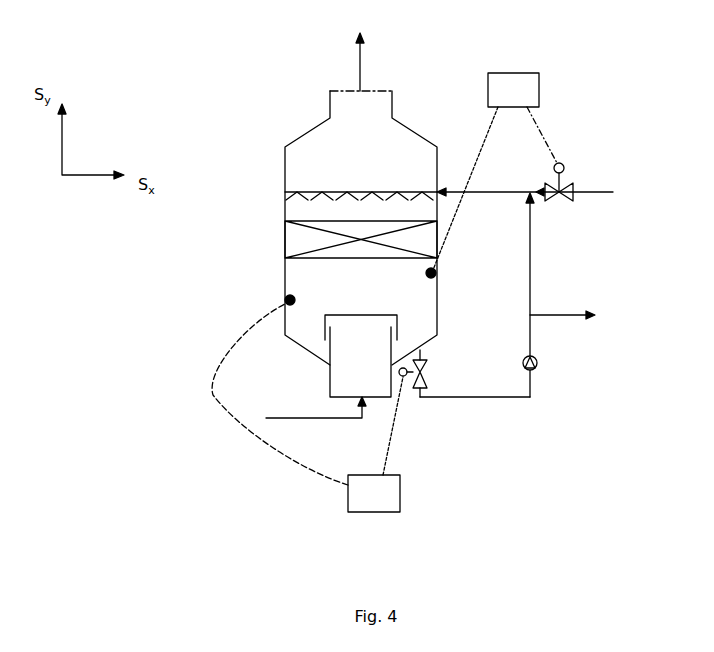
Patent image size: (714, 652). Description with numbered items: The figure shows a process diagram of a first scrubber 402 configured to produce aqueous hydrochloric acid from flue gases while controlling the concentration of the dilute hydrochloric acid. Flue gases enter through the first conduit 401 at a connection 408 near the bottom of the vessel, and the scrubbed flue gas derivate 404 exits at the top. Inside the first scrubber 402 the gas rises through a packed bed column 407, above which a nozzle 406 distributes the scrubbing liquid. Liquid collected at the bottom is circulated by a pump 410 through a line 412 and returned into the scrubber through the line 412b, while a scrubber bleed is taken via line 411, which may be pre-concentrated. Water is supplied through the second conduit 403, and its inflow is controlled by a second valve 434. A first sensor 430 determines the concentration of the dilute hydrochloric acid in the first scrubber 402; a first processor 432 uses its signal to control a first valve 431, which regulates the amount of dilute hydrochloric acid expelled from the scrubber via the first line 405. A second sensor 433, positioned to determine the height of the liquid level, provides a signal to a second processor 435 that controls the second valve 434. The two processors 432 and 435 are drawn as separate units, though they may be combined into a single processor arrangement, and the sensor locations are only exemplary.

The first conduit 401 is at (300, 420).
The first scrubber 402 is at (282, 165).
The second conduit 403 is at (582, 190).
The flue gas derivate 404 is at (363, 82).
The first line 405 is at (472, 397).
The nozzle 406 is at (440, 200).
The packed bed column 407 is at (292, 240).
The connection 408 is at (325, 372).
The pump 410 is at (540, 363).
The line 411 is at (548, 315).
The line 412 is at (532, 243).
The line 412b is at (452, 190).
The first sensor 430 is at (285, 300).
The first valve 431 is at (421, 392).
The first processor 432 is at (307, 407).
The second sensor 433 is at (437, 274).
The second valve 434 is at (552, 184).
The second processor 435 is at (495, 171).